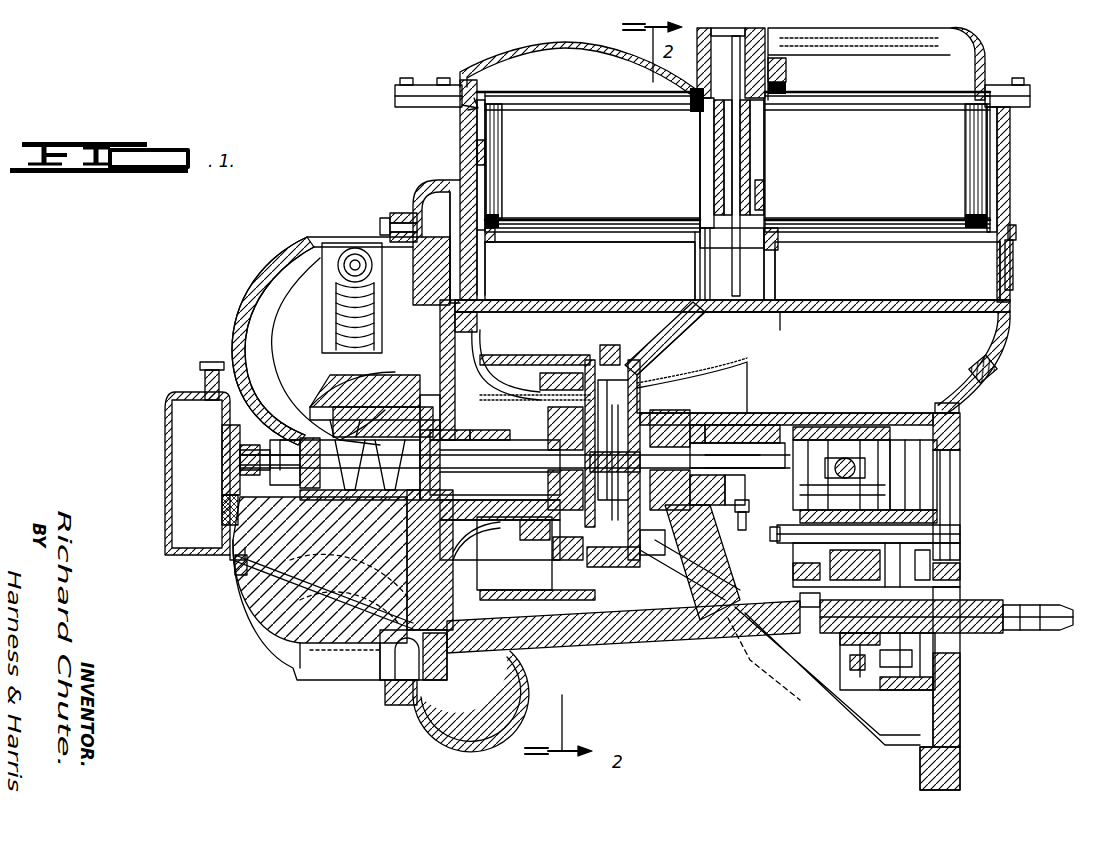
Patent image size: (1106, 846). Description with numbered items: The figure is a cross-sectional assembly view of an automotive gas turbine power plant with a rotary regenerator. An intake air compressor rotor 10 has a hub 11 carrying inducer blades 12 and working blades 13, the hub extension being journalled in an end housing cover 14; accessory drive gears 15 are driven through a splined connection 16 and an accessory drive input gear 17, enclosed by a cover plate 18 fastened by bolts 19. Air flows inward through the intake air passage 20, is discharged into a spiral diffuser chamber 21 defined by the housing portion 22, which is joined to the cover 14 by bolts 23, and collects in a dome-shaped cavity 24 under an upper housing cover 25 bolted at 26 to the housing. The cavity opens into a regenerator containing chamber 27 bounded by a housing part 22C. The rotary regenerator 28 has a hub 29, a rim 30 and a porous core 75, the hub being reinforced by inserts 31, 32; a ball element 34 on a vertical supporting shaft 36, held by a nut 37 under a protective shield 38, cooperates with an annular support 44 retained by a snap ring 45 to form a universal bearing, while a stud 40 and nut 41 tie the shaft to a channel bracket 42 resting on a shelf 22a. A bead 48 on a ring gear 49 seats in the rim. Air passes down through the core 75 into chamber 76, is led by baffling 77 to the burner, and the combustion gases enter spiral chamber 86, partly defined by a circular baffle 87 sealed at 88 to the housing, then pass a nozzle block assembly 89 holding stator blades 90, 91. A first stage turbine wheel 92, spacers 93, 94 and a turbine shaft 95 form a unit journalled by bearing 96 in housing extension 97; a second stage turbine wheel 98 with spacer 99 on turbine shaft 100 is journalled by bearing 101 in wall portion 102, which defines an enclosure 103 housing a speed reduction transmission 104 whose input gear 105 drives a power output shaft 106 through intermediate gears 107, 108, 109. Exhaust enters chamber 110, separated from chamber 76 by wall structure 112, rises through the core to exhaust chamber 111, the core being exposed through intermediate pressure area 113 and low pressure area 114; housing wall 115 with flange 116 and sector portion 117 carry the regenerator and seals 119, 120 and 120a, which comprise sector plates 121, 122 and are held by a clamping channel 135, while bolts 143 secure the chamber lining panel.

The intake air compressor rotor 10 is at (380, 395).
The rotor hub 11 is at (318, 428).
The inducer blades 12 is at (350, 477).
The working blades 13 is at (361, 477).
The end housing cover 14 is at (240, 322).
The accessory drive gears 15 is at (235, 558).
The splined connection 16 is at (230, 470).
The accessory drive input gear 17 is at (225, 500).
The cover plate 18 is at (165, 428).
The bolts 19 is at (205, 386).
The intake air passage 20 is at (328, 351).
The diffuser chamber 21 is at (436, 242).
The power plant housing portion 22 is at (448, 137).
The housing part 22C is at (460, 110).
The supporting shelf 22a is at (770, 312).
The bolts 23 is at (380, 222).
The dome-shaped cavity 24 is at (592, 147).
The upper housing cover 25 is at (488, 64).
The bolts 26 is at (405, 80).
The regenerator containing chamber 27 is at (477, 150).
The rotary regenerator 28 is at (1020, 197).
The circular hub 29 is at (740, 170).
The rim 30 is at (1000, 168).
The upper cylindrical insert 31 is at (700, 136).
The lower cylindrical insert 32 is at (764, 196).
The ball element 34 is at (760, 132).
The vertical supporting shaft 36 is at (762, 152).
The nut 37 is at (712, 22).
The protective shield 38 is at (748, 30).
The stud 40 is at (728, 250).
The nut 41 is at (770, 243).
The channel shaped bracket 42 is at (778, 268).
The annular support 44 is at (714, 158).
The snap ring 45 is at (724, 170).
The annular bead 48 is at (1012, 120).
The ring gear 49 is at (500, 140).
The regenerator core 75 is at (877, 162).
The intermediate pressure chamber 76 is at (590, 271).
The baffling 77 is at (530, 358).
The spiral-shaped chamber 86 is at (514, 553).
The circular baffle 87 is at (500, 395).
The fluid seal 88 is at (470, 340).
The nozzle block assembly 89 is at (611, 343).
The first ring of stator blades 90 is at (548, 395).
The second ring of stator blades 91 is at (634, 375).
The first stage turbine wheel 92 is at (610, 554).
The first spacer element 93 is at (532, 537).
The second spacer element 94 is at (500, 467).
The turbine shaft 95 is at (450, 441).
The bearing 96 is at (520, 450).
The housing extension 97 is at (490, 525).
The second stage turbine wheel 98 is at (652, 410).
The turbine wheel spacer element 99 is at (740, 455).
The turbine shaft 100 is at (745, 485).
The bearing 101 is at (690, 425).
The apertured wall portion 102 is at (765, 413).
The enclosure 103 is at (708, 562).
The speed reduction transmission mechanism 104 is at (968, 516).
The input gear assembly 105 is at (832, 445).
The power output shaft 106 is at (965, 600).
The intermediate gear 107 is at (900, 690).
The intermediate gear 108 is at (945, 505).
The intermediate gear 109 is at (749, 512).
The exhaust chamber 110 is at (818, 362).
The dome-like exhaust chamber 111 is at (876, 64).
The wall structure 112 is at (690, 324).
The intermediate pressure area 113 is at (495, 232).
The low pressure area 114 is at (887, 267).
The cylindrical vertical housing wall 115 is at (495, 260).
The inturned flange 116 is at (482, 240).
The sector defining portion 117 is at (786, 88).
The upper seal 119 is at (878, 102).
The lower seal 120 is at (948, 225).
The semi-circular seal 120a is at (500, 222).
The upper annular sector plate 121 is at (498, 96).
The lower annular sector plate 122 is at (492, 216).
The resilient clamping channel 135 is at (690, 96).
The bolts 143 is at (786, 66).